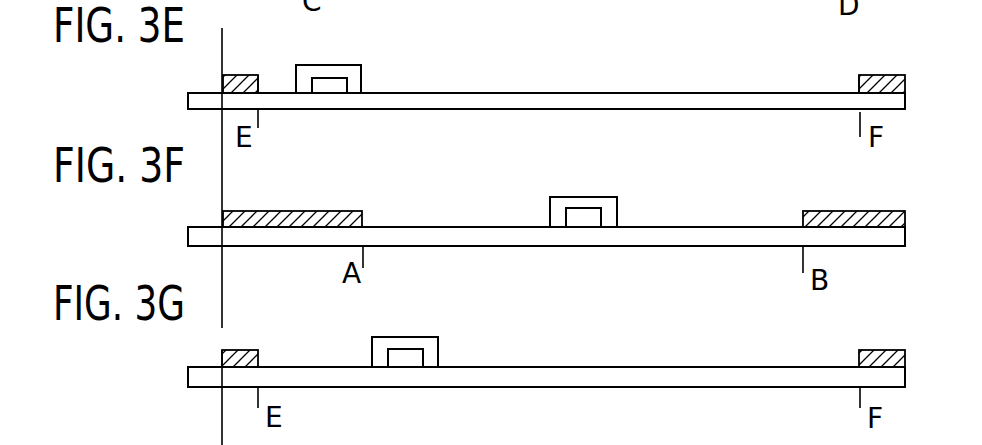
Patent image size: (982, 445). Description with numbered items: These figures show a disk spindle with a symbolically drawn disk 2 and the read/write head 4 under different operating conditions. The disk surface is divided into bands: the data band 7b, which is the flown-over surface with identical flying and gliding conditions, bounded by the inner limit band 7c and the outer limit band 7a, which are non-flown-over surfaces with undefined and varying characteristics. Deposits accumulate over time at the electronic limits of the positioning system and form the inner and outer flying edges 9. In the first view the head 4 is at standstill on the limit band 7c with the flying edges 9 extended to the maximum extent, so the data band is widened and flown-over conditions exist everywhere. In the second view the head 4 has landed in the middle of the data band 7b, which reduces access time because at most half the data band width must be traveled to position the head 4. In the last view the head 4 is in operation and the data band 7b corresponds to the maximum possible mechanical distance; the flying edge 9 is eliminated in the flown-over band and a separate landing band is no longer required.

In FIG. 3E, the disk 2 is at (190, 100).
In FIG. 3F, the disk 2 is at (190, 237).
In FIG. 3G, the disk 2 is at (190, 375).
In FIG. 3E, the read/write head 4 is at (348, 65).
In FIG. 3F, the read/write head 4 is at (595, 197).
In FIG. 3G, the read/write head 4 is at (412, 337).
In FIG. 3E, the outer limit band 7a is at (880, 77).
In FIG. 3E, the data band 7b is at (562, 93).
In FIG. 3G, the data band 7b is at (557, 367).
In FIG. 3E, the inner limit band 7c is at (233, 77).
In FIG. 3E, the flying edges 9 is at (258, 75).
In FIG. 3F, the flying edges 9 is at (362, 213).